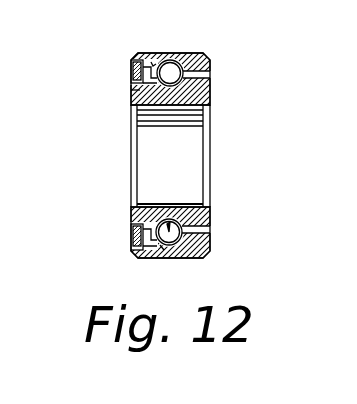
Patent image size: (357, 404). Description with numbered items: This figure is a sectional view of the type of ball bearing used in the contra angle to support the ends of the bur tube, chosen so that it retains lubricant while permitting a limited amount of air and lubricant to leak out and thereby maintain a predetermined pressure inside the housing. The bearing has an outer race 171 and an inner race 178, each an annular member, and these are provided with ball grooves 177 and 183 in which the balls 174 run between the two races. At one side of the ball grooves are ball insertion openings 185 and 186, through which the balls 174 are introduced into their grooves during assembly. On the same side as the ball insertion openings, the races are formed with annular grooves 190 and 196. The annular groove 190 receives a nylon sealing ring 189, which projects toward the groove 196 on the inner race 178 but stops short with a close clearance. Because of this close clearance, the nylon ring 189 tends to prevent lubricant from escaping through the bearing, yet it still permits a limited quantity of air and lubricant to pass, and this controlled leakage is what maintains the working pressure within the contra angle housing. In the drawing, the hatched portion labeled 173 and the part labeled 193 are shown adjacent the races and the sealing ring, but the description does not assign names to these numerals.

The outer race 171 is at (197, 64).
The raceway groove 173 is at (211, 75).
The balls 174 is at (171, 68).
The ball groove 177 is at (178, 248).
The inner race 178 is at (197, 95).
The ball groove 183 is at (160, 245).
The ball insertion opening 185 is at (152, 62).
The ball insertion opening 186 is at (131, 90).
The nylon sealing ring 189 is at (131, 71).
The annular groove 190 is at (134, 70).
The seal 193 is at (141, 222).
The annular groove 196 is at (140, 207).